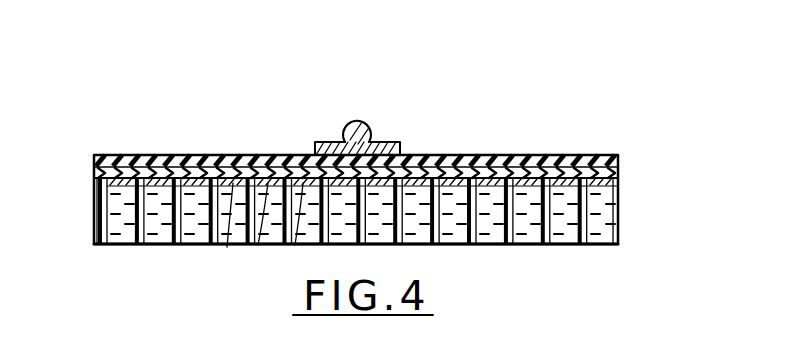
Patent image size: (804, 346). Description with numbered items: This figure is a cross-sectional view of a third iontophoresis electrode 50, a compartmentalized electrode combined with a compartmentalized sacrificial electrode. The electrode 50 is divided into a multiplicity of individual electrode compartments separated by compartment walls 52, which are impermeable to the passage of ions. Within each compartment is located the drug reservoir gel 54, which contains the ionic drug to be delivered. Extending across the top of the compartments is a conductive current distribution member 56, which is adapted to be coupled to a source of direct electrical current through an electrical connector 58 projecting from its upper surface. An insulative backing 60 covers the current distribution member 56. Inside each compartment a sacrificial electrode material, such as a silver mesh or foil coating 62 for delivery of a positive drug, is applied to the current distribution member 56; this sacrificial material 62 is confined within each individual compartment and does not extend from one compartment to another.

The electrode 50 is at (364, 183).
The compartment walls 52 is at (173, 247).
The drug reservoir gel 54 is at (590, 225).
The conductive current distribution member 56 is at (620, 168).
The electrical connector 58 is at (363, 122).
The insulative backing 60 is at (602, 155).
The silver mesh or foil coating 62 is at (295, 245).